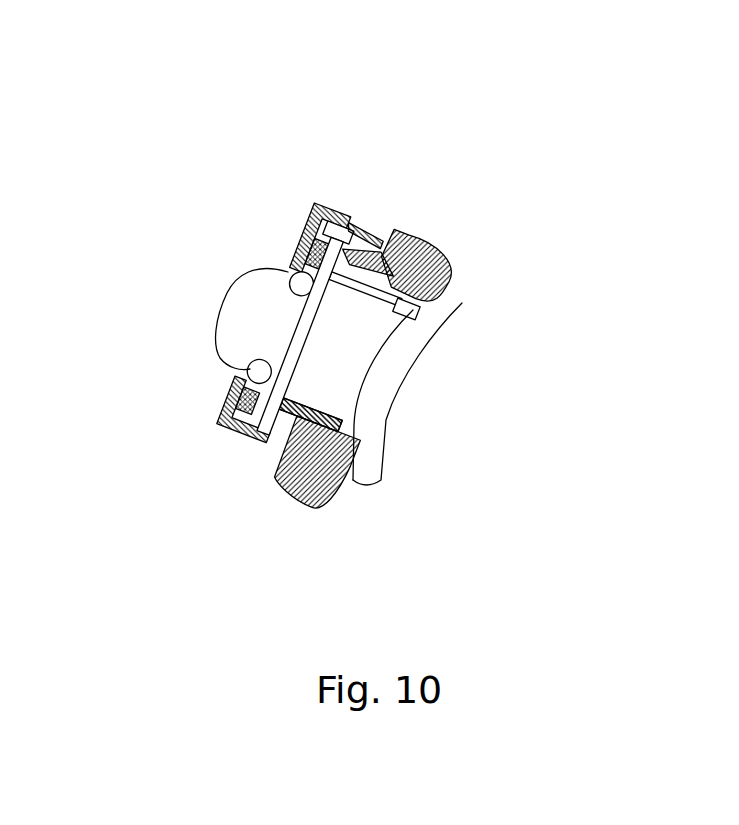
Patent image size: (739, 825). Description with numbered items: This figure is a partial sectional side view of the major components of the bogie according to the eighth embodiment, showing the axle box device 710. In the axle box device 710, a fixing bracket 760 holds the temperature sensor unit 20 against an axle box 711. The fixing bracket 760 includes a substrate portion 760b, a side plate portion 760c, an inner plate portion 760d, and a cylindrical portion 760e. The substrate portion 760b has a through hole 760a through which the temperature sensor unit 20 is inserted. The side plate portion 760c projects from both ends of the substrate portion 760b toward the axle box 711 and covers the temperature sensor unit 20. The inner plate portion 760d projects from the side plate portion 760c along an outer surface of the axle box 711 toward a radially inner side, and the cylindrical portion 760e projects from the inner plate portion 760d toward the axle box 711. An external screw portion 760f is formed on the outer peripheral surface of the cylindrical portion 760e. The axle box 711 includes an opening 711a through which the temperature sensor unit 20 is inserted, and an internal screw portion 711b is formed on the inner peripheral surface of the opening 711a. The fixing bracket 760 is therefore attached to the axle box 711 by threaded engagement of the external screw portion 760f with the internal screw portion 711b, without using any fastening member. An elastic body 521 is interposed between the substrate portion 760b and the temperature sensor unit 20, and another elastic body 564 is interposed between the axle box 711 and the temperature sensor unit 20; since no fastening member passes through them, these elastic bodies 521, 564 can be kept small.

The axle box device 710 is at (500, 134).
The axle box 711 is at (330, 500).
The opening 711a is at (413, 314).
The internal screw portion 711b is at (410, 222).
The fixing bracket 760 is at (317, 207).
The through hole 760a is at (283, 270).
The substrate portion 760b is at (300, 228).
The side plate portion 760c is at (343, 205).
The inner plate portion 760d is at (277, 463).
The cylindrical portion 760e is at (378, 230).
The external screw portion 760f is at (311, 505).
The temperature sensor unit 20 is at (227, 294).
The elastic body 521 is at (230, 385).
The elastic body 564 is at (228, 425).